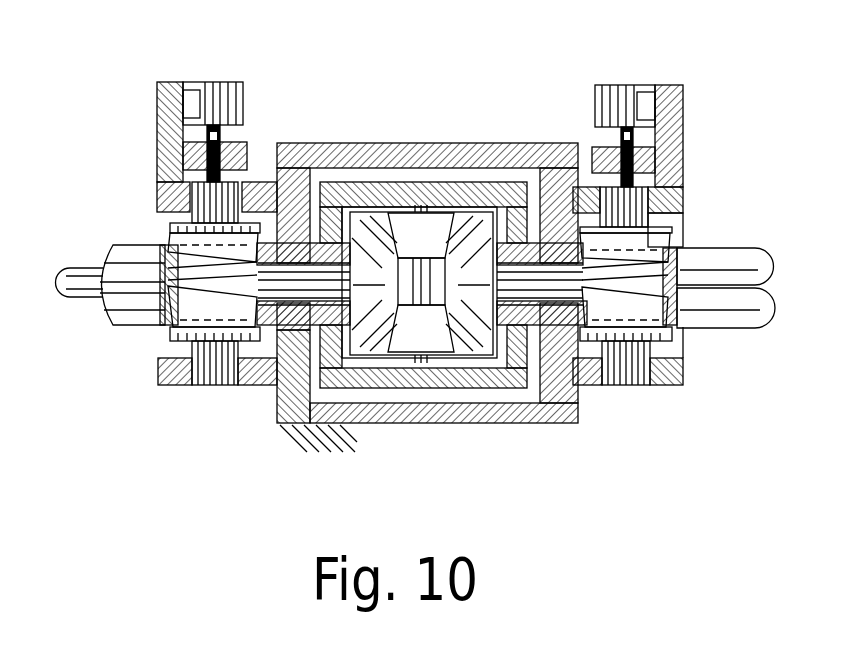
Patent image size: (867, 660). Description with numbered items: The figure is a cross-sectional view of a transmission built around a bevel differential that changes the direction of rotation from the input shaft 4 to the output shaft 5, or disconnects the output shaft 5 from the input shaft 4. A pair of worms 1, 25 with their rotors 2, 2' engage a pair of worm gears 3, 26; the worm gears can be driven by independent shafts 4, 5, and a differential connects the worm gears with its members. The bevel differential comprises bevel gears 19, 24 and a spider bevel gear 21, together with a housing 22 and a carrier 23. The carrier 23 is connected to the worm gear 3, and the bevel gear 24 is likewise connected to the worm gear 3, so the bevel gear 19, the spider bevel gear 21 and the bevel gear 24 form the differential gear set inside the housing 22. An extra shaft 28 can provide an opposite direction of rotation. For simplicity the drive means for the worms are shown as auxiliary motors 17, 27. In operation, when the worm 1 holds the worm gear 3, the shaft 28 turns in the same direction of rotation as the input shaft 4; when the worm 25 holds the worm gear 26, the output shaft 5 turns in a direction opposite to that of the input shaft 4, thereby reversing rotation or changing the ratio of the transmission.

The worm 1 is at (597, 232).
The rotor 2 is at (583, 353).
The rotor 2' is at (220, 249).
The worm gear 3 is at (683, 382).
The input shaft 4 is at (72, 263).
The output shaft 5 is at (703, 285).
The auxiliary motor 17 is at (616, 108).
The bevel gear 19 is at (360, 257).
The spider bevel gear 21 is at (390, 222).
The housing 22 is at (278, 393).
The carrier 23 is at (369, 380).
The bevel gear 24 is at (488, 290).
The worm 25 is at (187, 263).
The worm gear 26 is at (217, 314).
The auxiliary motor 27 is at (213, 102).
The extra shaft 28 is at (130, 252).